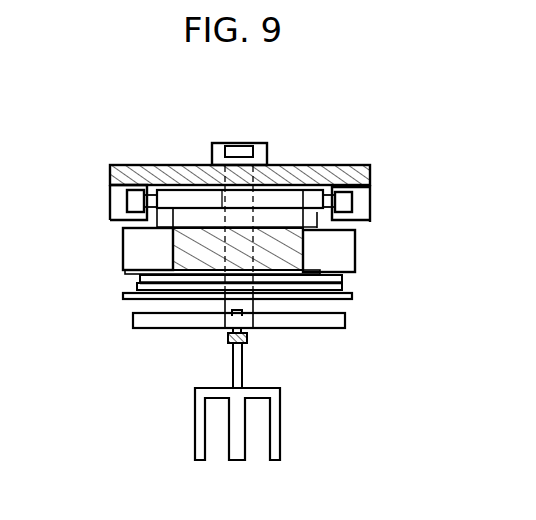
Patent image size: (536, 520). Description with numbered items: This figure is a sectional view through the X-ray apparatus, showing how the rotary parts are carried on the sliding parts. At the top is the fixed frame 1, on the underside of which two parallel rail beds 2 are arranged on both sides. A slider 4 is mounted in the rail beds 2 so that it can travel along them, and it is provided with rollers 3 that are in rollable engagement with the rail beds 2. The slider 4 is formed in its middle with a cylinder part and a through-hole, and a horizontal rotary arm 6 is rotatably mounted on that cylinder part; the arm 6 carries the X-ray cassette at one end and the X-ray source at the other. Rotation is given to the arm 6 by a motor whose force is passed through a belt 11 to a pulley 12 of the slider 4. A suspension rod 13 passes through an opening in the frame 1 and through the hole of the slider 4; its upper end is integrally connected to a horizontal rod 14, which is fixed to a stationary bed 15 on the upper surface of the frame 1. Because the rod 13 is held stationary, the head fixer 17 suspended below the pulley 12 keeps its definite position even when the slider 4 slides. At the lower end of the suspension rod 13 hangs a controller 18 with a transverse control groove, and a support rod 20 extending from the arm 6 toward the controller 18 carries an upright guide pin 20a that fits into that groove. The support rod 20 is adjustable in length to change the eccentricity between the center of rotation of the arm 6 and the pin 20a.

The fixed frame 1 is at (334, 168).
The rail bed 2 is at (112, 211).
The roller 3 is at (134, 198).
The slider 4 is at (180, 196).
The horizontal rotary arm 6 is at (150, 246).
The belt 11 is at (344, 283).
The pulley 12 is at (124, 296).
The suspension rod 13 is at (306, 238).
The horizontal rod 14 is at (246, 152).
The stationary bed 15 is at (222, 148).
The head fixer 17 is at (281, 423).
The controller 18 is at (162, 320).
The support rod 20 is at (248, 338).
The guide pin 20a is at (232, 313).